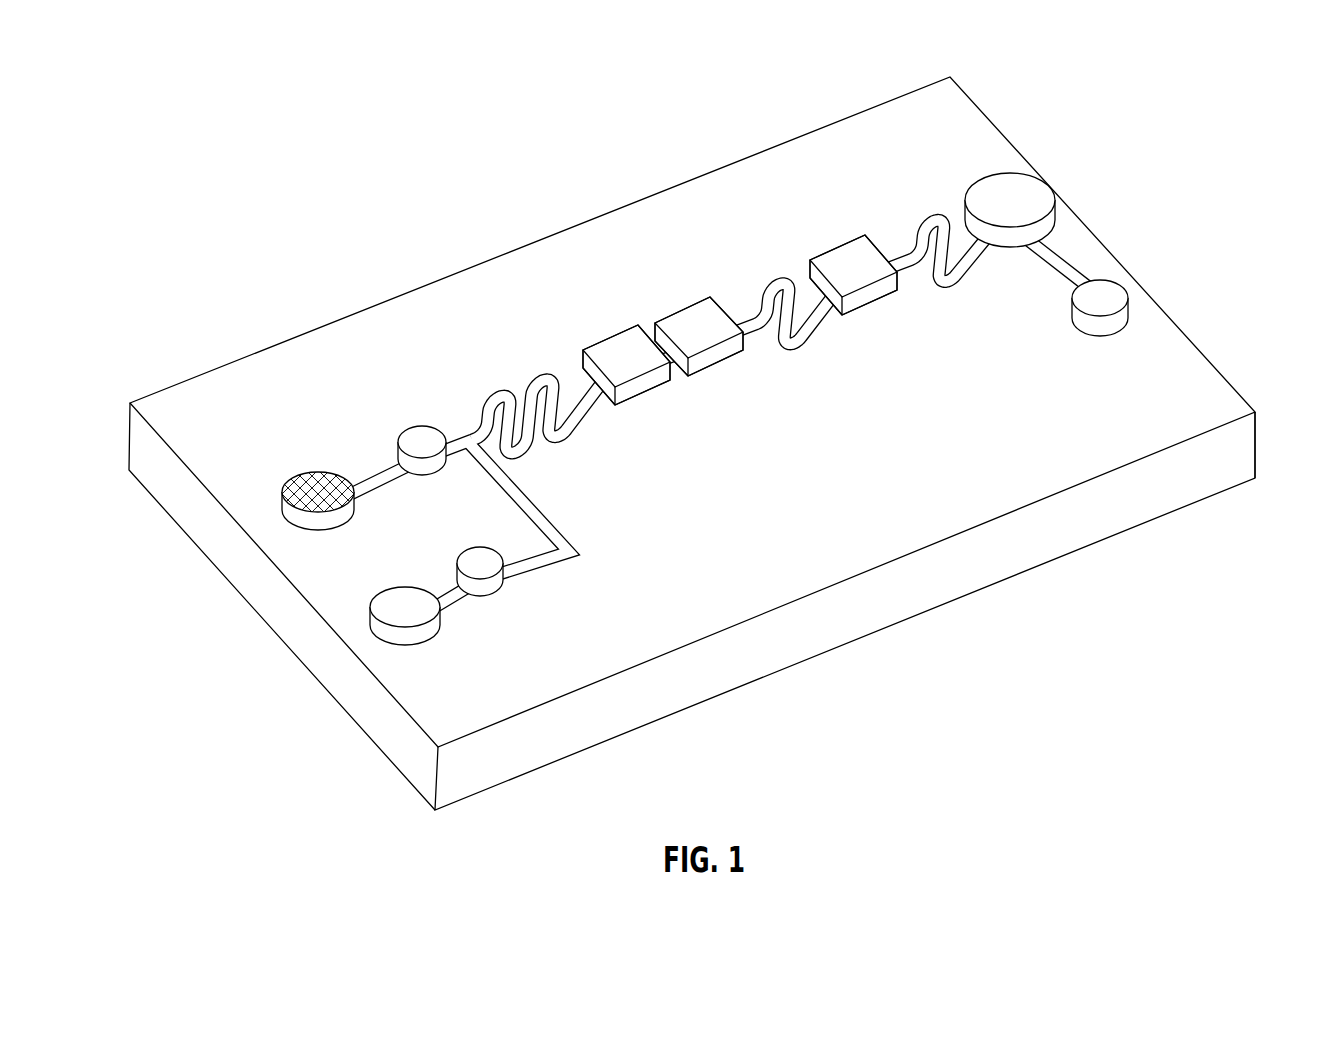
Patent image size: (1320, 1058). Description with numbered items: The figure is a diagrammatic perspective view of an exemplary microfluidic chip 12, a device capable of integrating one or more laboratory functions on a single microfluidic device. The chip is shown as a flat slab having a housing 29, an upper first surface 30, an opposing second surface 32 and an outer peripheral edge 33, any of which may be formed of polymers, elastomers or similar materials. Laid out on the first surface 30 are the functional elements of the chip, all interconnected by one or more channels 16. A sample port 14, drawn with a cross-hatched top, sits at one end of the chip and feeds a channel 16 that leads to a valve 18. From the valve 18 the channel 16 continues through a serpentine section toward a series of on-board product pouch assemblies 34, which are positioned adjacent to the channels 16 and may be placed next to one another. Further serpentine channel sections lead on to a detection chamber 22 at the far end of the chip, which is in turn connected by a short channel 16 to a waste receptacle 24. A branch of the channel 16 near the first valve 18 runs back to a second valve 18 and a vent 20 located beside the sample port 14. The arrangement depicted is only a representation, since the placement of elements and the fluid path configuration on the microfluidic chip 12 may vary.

The microfluidic chip 12 is at (700, 443).
The sample port 14 is at (342, 474).
The channel 16 is at (1063, 258).
The valve 18 is at (403, 423).
The vent 20 is at (380, 585).
The detection chamber 22 is at (1030, 176).
The waste receptacle 24 is at (1133, 284).
The housing 29 is at (221, 544).
The first surface 30 is at (270, 372).
The second surface 32 is at (548, 769).
The outer peripheral edge 33 is at (1248, 453).
The product pouch assembly 34 is at (840, 246).